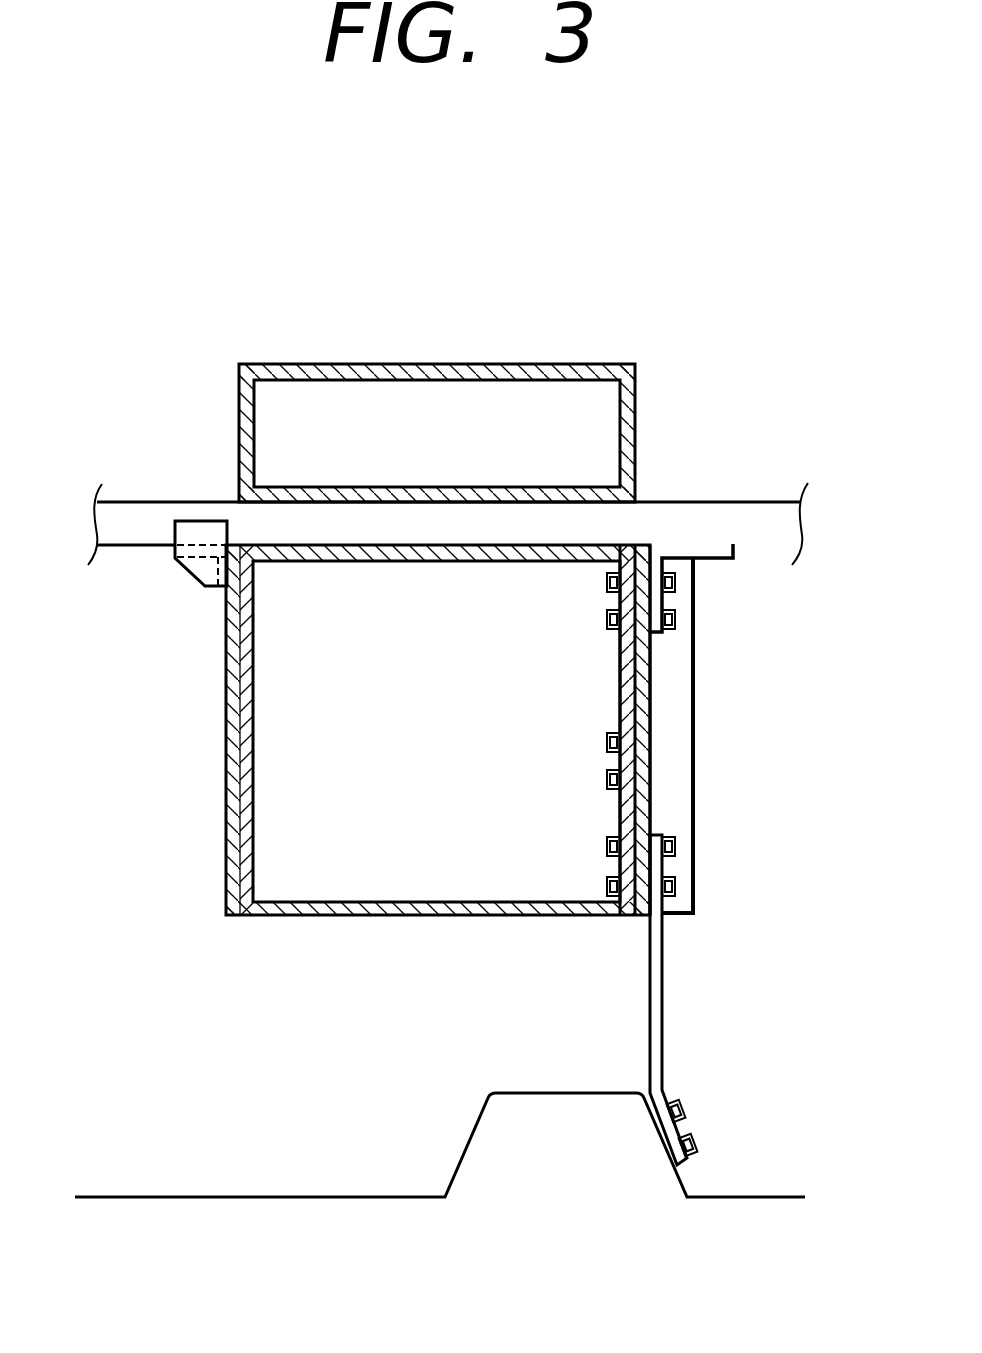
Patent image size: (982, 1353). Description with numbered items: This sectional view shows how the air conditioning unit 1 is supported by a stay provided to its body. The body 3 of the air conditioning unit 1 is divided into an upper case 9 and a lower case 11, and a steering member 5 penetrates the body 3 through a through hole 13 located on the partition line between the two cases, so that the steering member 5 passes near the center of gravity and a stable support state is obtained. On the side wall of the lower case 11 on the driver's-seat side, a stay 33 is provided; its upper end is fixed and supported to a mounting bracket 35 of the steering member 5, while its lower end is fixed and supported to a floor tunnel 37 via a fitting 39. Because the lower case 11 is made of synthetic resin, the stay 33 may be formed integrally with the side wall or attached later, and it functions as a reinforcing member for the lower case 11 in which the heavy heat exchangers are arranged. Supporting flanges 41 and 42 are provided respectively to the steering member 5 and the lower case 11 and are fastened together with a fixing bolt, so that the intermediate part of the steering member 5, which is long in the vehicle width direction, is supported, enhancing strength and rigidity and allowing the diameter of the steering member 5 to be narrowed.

The air conditioning unit 1 is at (244, 336).
The body of the air conditioning unit 3 is at (860, 298).
The steering member 5 is at (362, 530).
The upper case 9 is at (610, 428).
The lower case 11 is at (610, 663).
The through hole 13 is at (265, 503).
The stay 33 is at (676, 738).
The mounting bracket 35 is at (612, 568).
The floor tunnel 37 is at (547, 1113).
The fitting 39 is at (658, 1026).
The supporting flange 41 is at (182, 534).
The supporting flange 42 is at (193, 570).